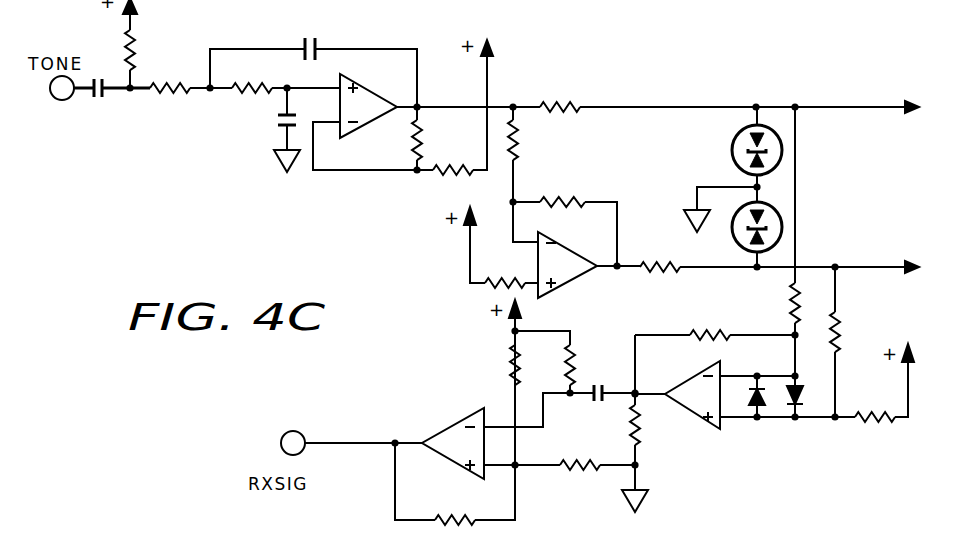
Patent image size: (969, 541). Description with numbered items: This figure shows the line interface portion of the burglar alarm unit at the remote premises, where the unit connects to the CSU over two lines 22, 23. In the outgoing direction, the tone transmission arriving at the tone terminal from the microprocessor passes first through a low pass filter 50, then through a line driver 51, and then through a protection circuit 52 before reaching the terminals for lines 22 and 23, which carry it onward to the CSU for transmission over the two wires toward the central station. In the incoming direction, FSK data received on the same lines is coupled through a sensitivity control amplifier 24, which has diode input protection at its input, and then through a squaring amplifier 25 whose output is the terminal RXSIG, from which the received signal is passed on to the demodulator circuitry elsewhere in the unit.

The low pass filter 50 is at (335, 40).
The line driver 51 is at (589, 96).
The protection circuit 52 is at (768, 98).
The line 22 is at (875, 111).
The line 23 is at (870, 265).
The sensitivity control amplifier 24 is at (691, 407).
The squaring amplifier 25 is at (456, 425).